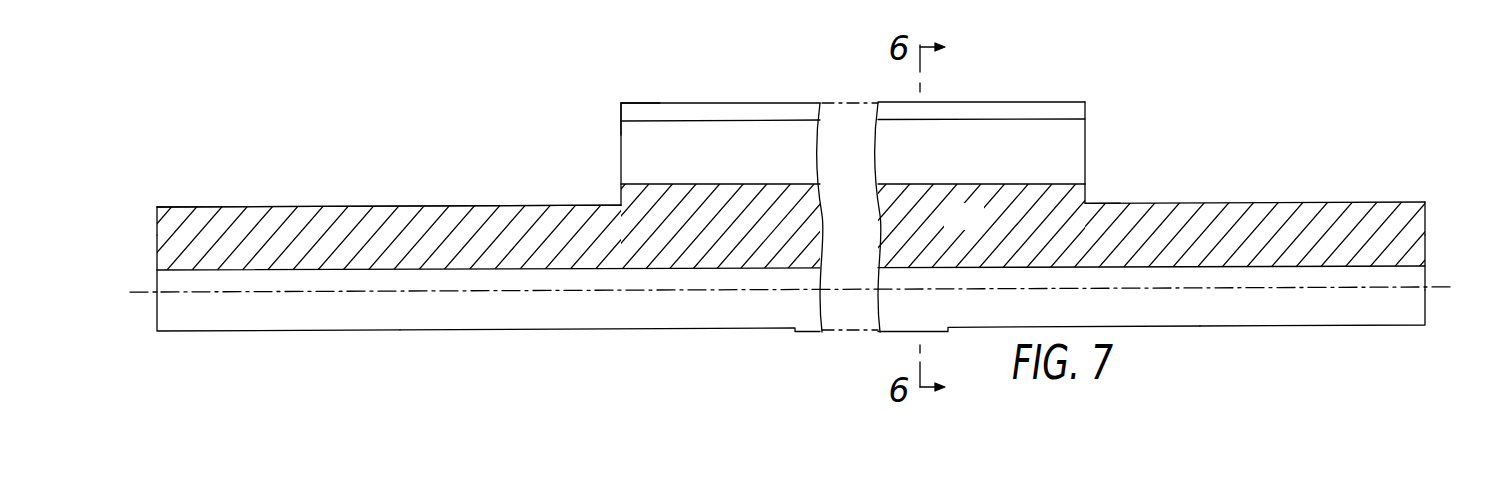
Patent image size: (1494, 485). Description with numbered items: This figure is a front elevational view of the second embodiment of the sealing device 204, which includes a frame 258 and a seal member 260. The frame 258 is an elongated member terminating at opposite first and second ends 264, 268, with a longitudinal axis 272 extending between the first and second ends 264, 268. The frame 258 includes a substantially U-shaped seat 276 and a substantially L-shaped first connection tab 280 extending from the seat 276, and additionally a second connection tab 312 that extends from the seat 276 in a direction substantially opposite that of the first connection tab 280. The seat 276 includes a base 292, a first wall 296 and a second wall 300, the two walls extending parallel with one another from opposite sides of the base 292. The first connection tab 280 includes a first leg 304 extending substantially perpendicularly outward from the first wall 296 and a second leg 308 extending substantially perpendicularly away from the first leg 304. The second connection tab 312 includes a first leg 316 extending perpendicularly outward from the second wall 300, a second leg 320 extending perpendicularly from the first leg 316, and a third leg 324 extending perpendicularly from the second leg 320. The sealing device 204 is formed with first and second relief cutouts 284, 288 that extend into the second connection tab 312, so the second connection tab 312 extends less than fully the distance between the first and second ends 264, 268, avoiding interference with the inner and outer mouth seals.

The sealing device 204 is at (1104, 116).
The frame 258 is at (1104, 180).
The seal member 260 is at (981, 228).
The first end 264 is at (1425, 248).
The second end 268 is at (155, 236).
The longitudinal axis 272 is at (1373, 288).
The seat 276 is at (1425, 215).
The first connection tab 280 is at (1425, 305).
The first relief cutout 284 is at (1268, 202).
The second relief cutout 288 is at (440, 204).
The base 292 is at (157, 214).
The first wall 296 is at (224, 268).
The second wall 300 is at (647, 184).
The first leg 304 is at (155, 305).
The second leg 308 is at (800, 333).
The second connection tab 312 is at (614, 116).
The first leg 316 is at (621, 138).
The second leg 320 is at (718, 120).
The third leg 324 is at (655, 103).